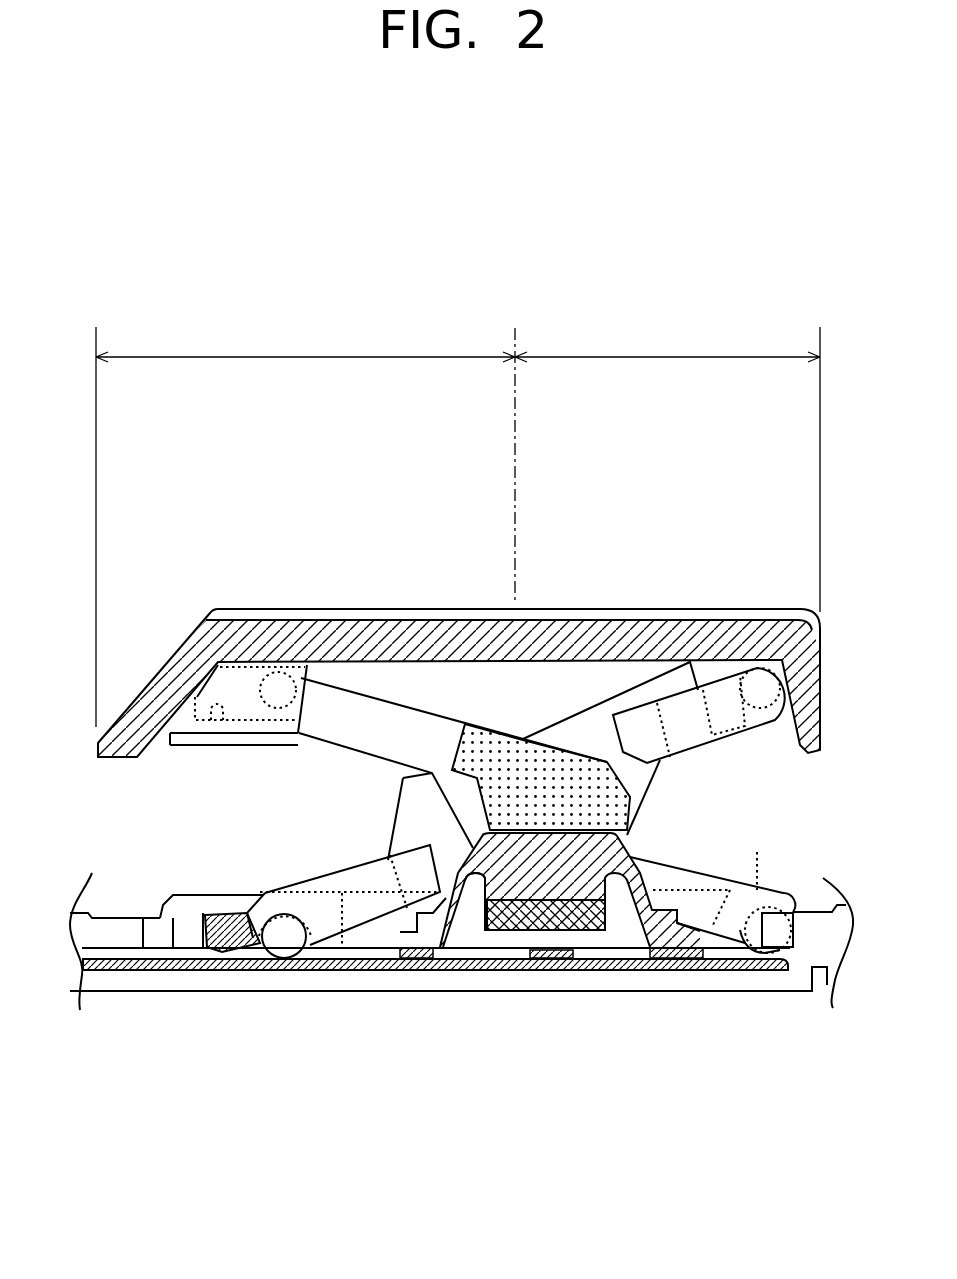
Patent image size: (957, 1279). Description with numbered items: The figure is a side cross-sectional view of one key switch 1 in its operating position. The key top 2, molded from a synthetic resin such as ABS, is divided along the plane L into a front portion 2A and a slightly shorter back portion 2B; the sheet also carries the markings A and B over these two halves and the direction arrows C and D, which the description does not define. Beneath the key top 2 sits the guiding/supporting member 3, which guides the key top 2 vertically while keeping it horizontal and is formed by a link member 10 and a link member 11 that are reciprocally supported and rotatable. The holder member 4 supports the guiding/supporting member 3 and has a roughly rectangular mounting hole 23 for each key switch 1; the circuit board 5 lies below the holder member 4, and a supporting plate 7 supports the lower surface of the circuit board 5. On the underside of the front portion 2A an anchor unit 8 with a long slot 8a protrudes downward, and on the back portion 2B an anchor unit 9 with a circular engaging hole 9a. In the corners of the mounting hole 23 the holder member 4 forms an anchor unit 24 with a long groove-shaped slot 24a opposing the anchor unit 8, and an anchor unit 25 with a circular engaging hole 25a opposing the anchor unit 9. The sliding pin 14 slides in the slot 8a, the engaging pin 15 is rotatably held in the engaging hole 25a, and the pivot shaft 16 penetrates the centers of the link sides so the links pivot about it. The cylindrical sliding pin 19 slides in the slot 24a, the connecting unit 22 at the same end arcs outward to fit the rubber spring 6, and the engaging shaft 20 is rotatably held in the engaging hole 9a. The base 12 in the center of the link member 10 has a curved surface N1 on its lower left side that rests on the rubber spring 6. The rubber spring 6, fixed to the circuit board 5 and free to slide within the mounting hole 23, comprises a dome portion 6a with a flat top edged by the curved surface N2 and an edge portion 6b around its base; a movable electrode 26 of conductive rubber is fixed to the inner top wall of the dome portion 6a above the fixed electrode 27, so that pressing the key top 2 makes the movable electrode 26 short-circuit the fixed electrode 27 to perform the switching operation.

The key switch 1 is at (546, 270).
The key top 2 is at (567, 494).
The front portion 2A is at (390, 617).
The back portion 2B is at (641, 609).
The guiding/supporting member 3 is at (793, 797).
The holder member 4 is at (128, 892).
The circuit board 5 is at (94, 978).
The rubber spring 6 is at (462, 851).
The dome portion 6a is at (477, 883).
The edge portion 6b is at (433, 925).
The supporting plate 7 is at (178, 982).
The anchor unit 8 is at (182, 727).
The long slot 8a is at (225, 722).
The anchor unit 9 is at (719, 666).
The circular engaging hole 9a is at (746, 700).
The link member 10 is at (330, 725).
The link member 11 is at (652, 781).
The base 12 is at (560, 772).
The sliding pin 14 is at (276, 670).
The engaging pin 15 is at (750, 948).
The pivot shaft 16 is at (522, 805).
The cylindrical sliding pin 19 is at (273, 958).
The engaging shaft 20 is at (757, 730).
The connecting unit 22 is at (222, 953).
The mounting hole 23 is at (768, 966).
The anchor unit 24 is at (180, 903).
The long groove-shaped slot 24a is at (208, 912).
The anchor unit 25 is at (796, 905).
The circular engaging hole 25a is at (783, 893).
The movable electrode 26 is at (603, 932).
The fixed electrode 27 is at (545, 960).
The curved surface N1 is at (487, 822).
The curved surface N2 is at (632, 837).
The plane L is at (515, 444).
The left half width A is at (305, 527).
The right half width B is at (667, 469).
The direction C is at (346, 1152).
The direction D is at (330, 1189).